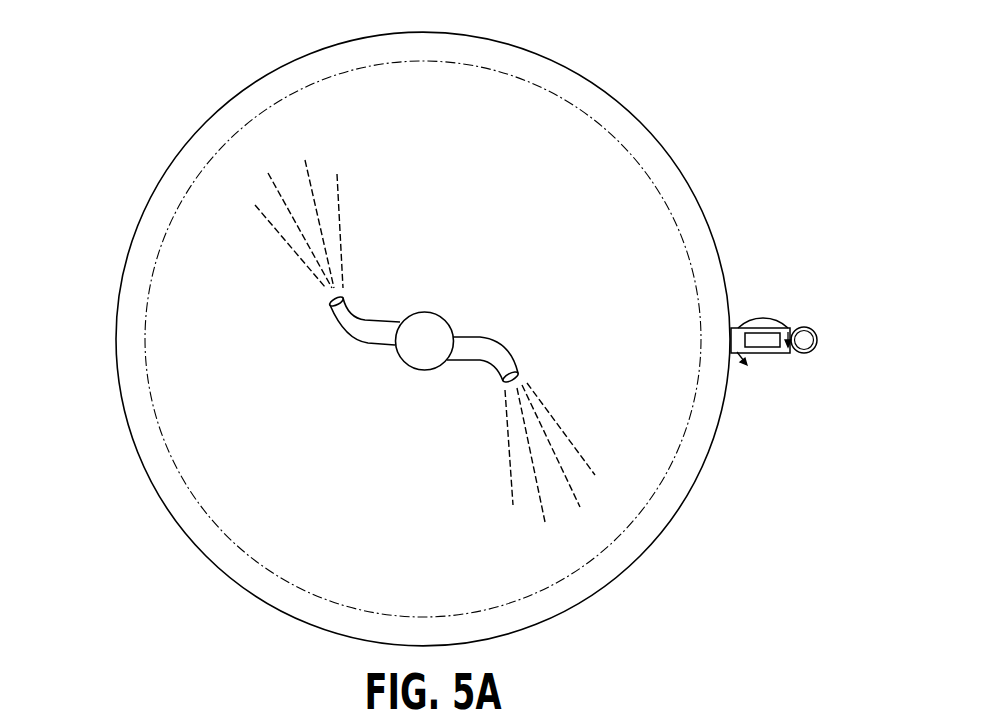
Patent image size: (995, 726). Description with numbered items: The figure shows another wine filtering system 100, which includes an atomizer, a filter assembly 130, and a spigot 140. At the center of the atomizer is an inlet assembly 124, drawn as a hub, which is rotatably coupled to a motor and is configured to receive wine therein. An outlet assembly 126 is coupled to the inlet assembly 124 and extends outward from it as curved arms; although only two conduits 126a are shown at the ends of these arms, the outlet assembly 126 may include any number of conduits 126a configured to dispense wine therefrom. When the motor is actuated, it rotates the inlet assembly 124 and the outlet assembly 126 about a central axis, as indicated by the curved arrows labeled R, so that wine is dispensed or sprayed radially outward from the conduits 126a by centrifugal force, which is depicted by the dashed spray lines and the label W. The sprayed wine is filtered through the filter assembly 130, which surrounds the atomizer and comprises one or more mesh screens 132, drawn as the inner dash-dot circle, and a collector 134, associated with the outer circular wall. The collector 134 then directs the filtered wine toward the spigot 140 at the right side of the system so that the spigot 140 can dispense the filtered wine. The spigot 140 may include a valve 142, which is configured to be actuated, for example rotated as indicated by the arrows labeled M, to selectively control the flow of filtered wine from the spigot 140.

The wine filtering system 100 is at (682, 102).
The inlet assembly 124 is at (448, 320).
The outlet assembly 126 is at (327, 322).
The conduits 126a is at (347, 335).
The filter assembly 130 is at (147, 210).
The mesh screens 132 is at (187, 200).
The collector 134 is at (118, 307).
The spigot 140 is at (816, 334).
The valve 142 is at (763, 353).